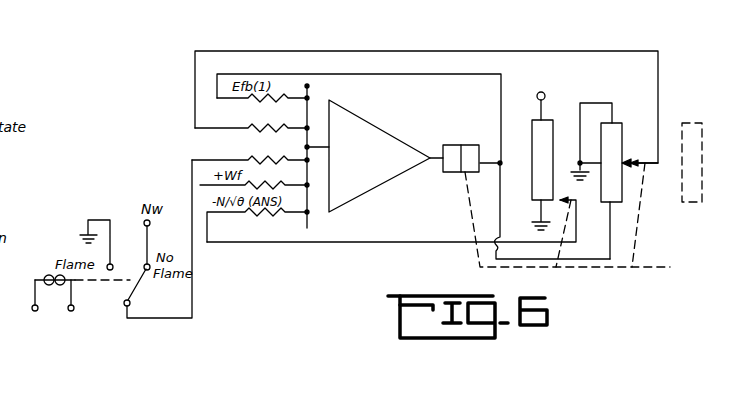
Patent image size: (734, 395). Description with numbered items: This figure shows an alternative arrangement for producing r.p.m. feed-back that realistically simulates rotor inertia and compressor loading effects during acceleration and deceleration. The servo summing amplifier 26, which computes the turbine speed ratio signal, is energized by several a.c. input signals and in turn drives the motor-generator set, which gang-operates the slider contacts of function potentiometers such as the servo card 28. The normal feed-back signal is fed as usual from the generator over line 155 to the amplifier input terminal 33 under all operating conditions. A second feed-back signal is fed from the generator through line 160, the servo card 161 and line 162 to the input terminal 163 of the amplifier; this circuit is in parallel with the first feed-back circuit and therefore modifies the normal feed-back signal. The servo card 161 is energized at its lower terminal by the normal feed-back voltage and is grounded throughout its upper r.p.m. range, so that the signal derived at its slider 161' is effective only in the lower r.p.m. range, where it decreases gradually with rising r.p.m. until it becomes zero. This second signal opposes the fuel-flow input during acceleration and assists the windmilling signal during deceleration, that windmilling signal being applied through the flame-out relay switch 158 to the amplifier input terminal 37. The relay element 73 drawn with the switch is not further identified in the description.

The line 162 is at (361, 51).
The line 155 is at (304, 74).
The amplifier input terminal 33 is at (312, 92).
The input terminal 163 is at (305, 128).
The amplifier input terminal 37 is at (300, 159).
The servo summing amplifier 26 is at (374, 122).
The servo card 28 is at (532, 140).
The line 160 is at (499, 221).
The servo card 161 is at (614, 181).
The slider 161' is at (650, 176).
The flame-out relay switch 158 is at (123, 301).
The flame relay coil 73 is at (47, 274).